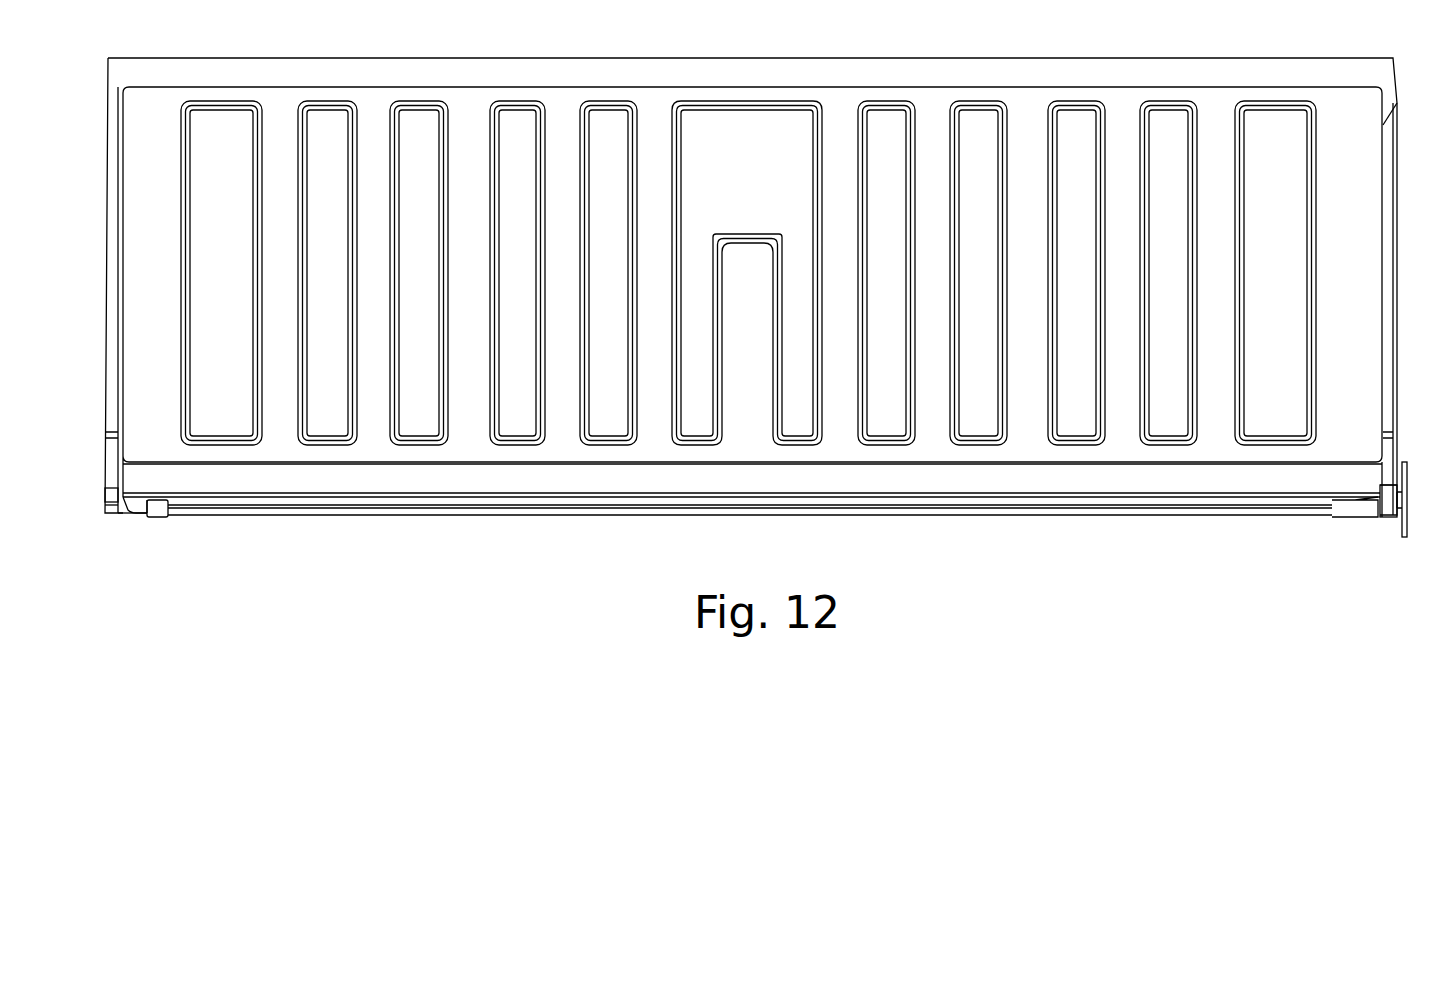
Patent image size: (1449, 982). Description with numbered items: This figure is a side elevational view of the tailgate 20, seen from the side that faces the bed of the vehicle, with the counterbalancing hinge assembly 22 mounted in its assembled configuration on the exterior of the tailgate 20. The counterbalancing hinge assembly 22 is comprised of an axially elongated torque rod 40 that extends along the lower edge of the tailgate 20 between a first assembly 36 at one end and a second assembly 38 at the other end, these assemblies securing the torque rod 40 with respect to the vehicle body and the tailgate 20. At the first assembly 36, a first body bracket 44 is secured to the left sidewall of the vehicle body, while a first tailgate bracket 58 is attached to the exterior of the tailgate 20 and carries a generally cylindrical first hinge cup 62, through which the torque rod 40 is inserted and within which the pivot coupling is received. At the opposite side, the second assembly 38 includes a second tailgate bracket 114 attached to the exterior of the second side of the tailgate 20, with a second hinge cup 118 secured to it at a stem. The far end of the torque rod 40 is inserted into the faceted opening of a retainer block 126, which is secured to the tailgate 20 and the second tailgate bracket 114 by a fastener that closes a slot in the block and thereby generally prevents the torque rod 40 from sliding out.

The tailgate 20 is at (730, 66).
The counterbalancing hinge assembly 22 is at (448, 580).
The first assembly 36 is at (1347, 563).
The second assembly 38 is at (148, 563).
The torque rod 40 is at (558, 513).
The first body bracket 44 is at (1408, 465).
The first tailgate bracket 58 is at (1340, 518).
The first hinge cup 62 is at (1390, 510).
The second tailgate bracket 114 is at (132, 518).
The second hinge cup 118 is at (113, 506).
The retainer block 126 is at (157, 512).